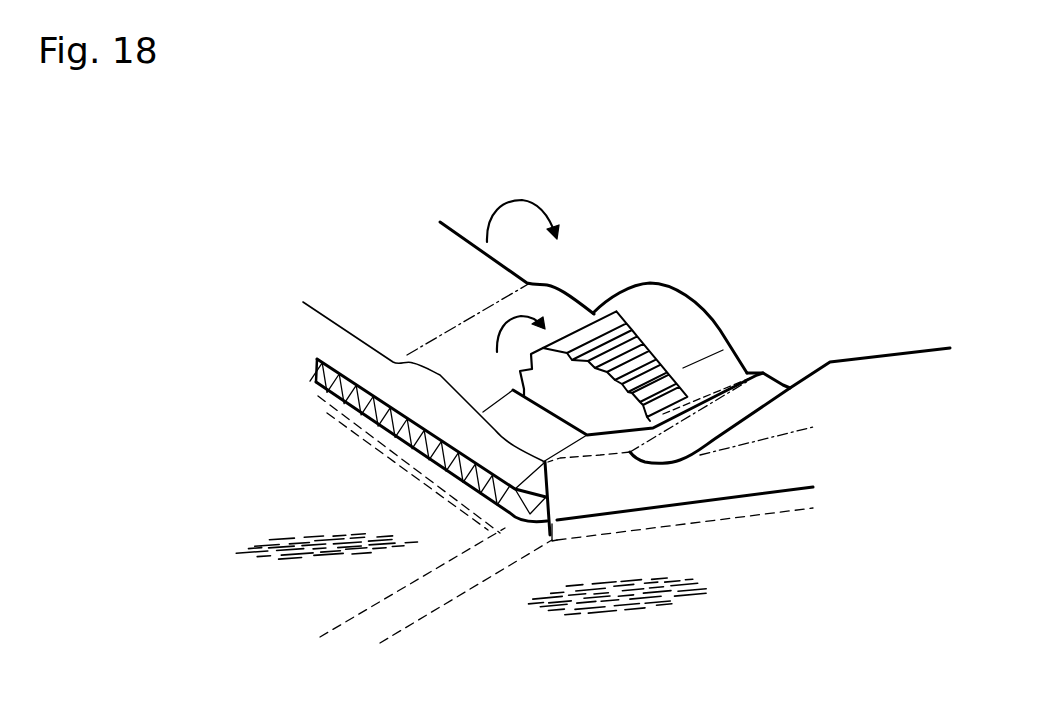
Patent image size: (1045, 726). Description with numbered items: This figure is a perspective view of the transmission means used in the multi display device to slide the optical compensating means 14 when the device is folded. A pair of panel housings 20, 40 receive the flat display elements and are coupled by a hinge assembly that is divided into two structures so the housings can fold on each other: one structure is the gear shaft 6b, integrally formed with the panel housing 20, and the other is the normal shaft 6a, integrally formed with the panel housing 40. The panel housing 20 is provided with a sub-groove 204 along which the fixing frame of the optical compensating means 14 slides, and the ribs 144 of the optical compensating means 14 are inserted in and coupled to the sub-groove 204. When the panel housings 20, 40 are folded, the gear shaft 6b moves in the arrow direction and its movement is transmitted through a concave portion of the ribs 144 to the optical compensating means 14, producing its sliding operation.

The sub-groove 204 is at (317, 370).
The ribs 144 is at (320, 397).
The optical compensating means 14 is at (340, 590).
The panel housing 20 is at (458, 257).
The gear shaft 6b is at (678, 310).
The normal shaft 6a is at (727, 343).
The panel housing 40 is at (872, 377).